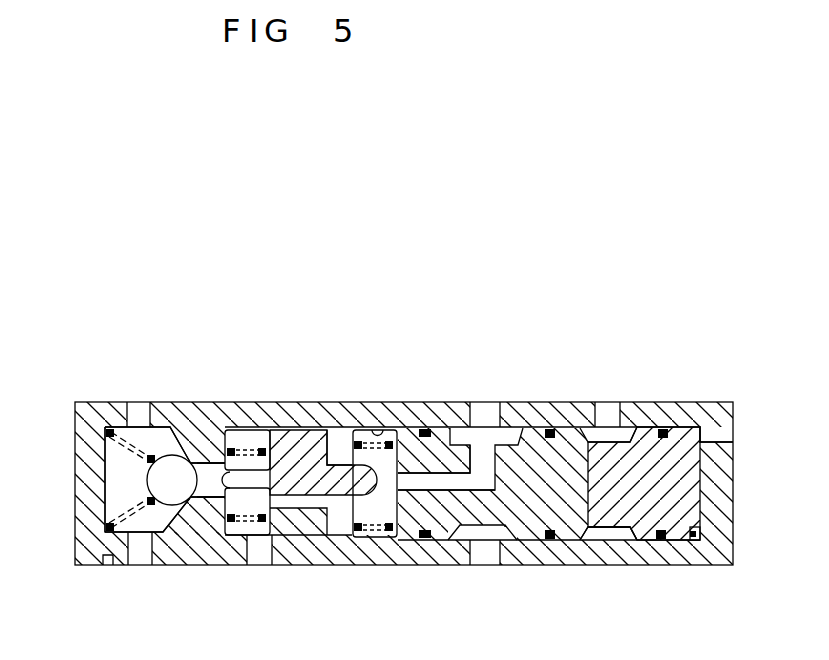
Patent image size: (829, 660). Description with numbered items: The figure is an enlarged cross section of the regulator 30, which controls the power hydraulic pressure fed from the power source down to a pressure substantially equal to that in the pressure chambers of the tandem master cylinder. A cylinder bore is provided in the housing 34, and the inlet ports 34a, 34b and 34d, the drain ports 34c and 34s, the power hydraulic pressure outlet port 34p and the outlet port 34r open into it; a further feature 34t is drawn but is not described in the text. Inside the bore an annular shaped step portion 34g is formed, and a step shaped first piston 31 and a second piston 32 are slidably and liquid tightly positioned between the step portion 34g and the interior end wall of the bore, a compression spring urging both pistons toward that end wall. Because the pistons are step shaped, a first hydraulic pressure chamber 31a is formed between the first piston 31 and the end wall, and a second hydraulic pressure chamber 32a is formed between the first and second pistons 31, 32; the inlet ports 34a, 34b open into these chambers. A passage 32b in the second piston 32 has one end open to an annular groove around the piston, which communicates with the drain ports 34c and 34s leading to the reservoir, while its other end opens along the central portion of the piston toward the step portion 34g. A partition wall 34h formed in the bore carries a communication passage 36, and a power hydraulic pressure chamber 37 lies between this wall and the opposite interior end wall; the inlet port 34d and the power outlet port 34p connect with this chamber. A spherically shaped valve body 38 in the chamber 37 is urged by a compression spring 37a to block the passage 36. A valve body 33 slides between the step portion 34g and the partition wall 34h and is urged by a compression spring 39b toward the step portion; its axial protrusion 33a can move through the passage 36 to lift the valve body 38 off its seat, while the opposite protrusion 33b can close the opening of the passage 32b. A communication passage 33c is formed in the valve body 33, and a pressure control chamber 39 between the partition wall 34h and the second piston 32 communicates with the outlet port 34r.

The regulator 30 is at (404, 424).
The first piston 31 is at (544, 530).
The first hydraulic pressure chamber 31a is at (726, 580).
The second piston 32 is at (628, 531).
The second hydraulic pressure chamber 32a is at (619, 565).
The passage 32b is at (446, 540).
The valve body 33 is at (315, 534).
The protrusion 33a is at (259, 520).
The protrusion 33b is at (380, 520).
The communication passage 33c is at (325, 534).
The housing 34 is at (435, 483).
The inlet port 34a is at (755, 413).
The inlet port 34b is at (622, 395).
The drain port 34c is at (497, 379).
The inlet port 34d is at (146, 379).
The annular shaped step portion 34g is at (330, 398).
The partition wall 34h is at (211, 414).
The power hydraulic pressure outlet port 34p is at (158, 572).
The outlet port 34r is at (280, 586).
The drain port 34s is at (502, 588).
The body passage 34t is at (395, 383).
The communication passage 36 is at (223, 550).
The power hydraulic pressure chamber 37 is at (100, 479).
The compression spring 37a is at (106, 583).
The spherically shaped valve body 38 is at (183, 533).
The pressure control chamber 39 is at (326, 489).
The compression spring 39b is at (260, 393).